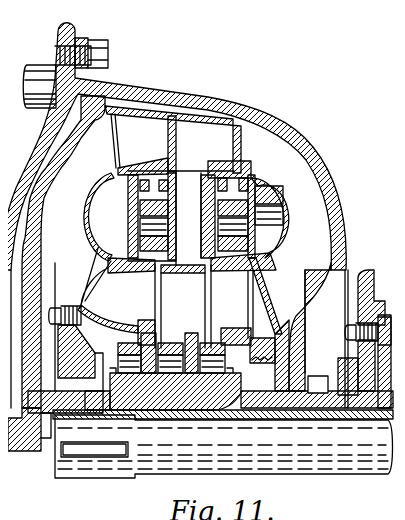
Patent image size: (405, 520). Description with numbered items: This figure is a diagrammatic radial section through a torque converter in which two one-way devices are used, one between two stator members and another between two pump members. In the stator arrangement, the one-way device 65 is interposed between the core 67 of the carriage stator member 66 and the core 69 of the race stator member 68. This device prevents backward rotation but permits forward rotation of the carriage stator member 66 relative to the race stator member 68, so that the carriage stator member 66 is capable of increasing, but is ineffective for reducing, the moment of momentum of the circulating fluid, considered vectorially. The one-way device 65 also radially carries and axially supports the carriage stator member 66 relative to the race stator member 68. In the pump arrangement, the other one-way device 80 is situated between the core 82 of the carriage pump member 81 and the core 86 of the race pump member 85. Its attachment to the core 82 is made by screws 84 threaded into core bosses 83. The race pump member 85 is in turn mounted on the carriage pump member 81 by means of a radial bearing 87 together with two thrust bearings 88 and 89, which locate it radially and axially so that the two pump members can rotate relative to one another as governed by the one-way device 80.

The one-way device 65 is at (138, 220).
The carriage stator member 66 is at (155, 143).
The core 67 is at (147, 162).
The race stator member 68 is at (134, 304).
The core 69 is at (125, 262).
The one-way device 80 is at (206, 215).
The carriage pump member 81 is at (294, 169).
The core 82 is at (277, 178).
The core bosses 83 is at (278, 205).
The screws 84 is at (202, 199).
The race pump member 85 is at (233, 294).
The core 86 is at (218, 263).
The radial bearing 87 is at (291, 353).
The thrust bearing 88 is at (293, 314).
The thrust bearing 89 is at (291, 333).